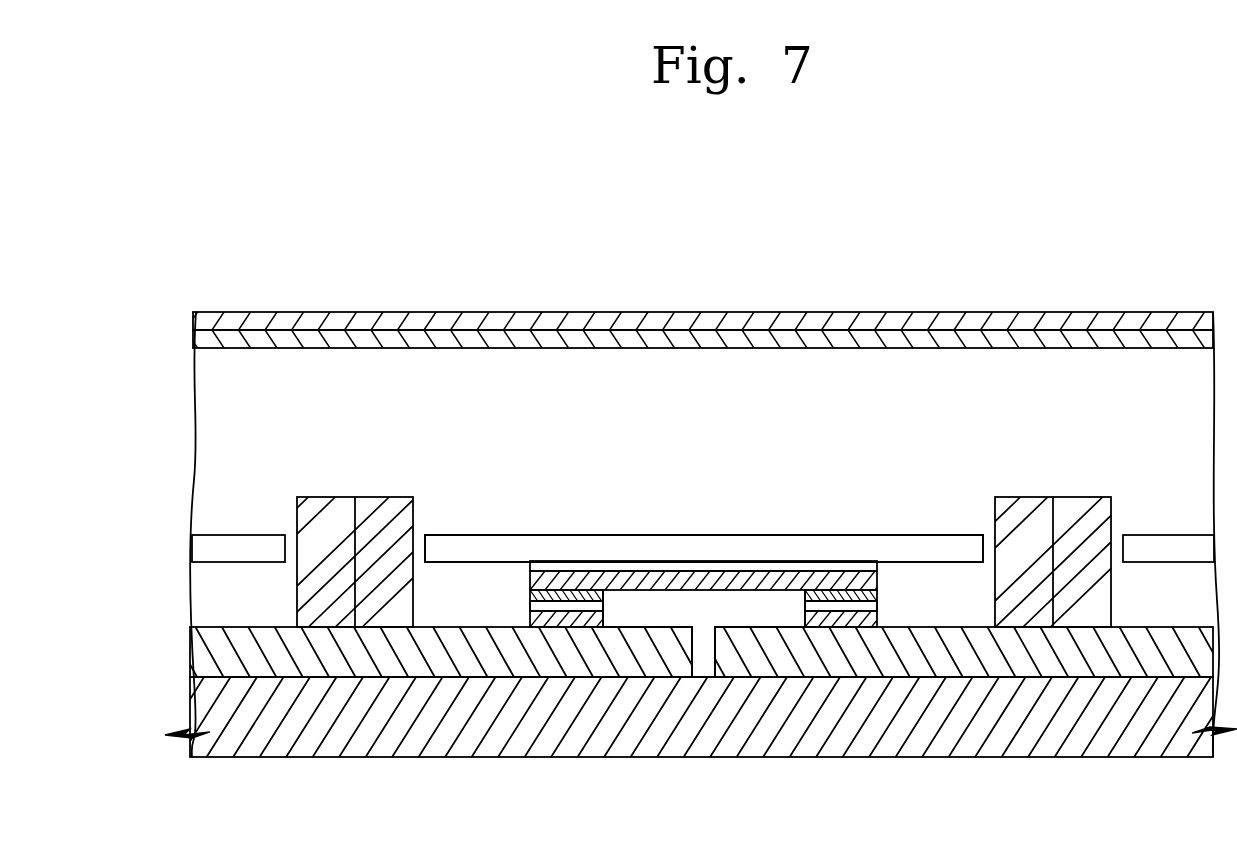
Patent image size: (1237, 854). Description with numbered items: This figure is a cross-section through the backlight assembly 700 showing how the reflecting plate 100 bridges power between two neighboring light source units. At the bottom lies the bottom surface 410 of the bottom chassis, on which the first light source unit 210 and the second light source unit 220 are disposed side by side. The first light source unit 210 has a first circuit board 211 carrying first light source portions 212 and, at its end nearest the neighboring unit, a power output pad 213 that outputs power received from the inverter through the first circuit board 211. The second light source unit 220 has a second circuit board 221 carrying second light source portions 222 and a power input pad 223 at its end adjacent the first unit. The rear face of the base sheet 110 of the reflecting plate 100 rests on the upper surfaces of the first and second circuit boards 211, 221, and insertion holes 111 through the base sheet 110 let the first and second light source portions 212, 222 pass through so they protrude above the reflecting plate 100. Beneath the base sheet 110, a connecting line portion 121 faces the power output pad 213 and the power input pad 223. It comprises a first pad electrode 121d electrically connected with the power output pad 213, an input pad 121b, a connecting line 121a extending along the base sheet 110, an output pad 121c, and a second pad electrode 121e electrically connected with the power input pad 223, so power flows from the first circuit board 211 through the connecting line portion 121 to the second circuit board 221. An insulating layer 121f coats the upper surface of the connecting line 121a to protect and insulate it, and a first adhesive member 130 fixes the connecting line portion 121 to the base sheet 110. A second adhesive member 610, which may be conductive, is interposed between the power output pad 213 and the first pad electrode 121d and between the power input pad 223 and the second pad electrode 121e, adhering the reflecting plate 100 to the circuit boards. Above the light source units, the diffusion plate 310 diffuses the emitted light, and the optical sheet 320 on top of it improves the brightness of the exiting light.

The backlight assembly 700 is at (1180, 178).
The diffusion plate 310 is at (867, 340).
The optical sheet 320 is at (1028, 323).
The reflecting plate 100 is at (1170, 531).
The base sheet 110 is at (938, 548).
The insertion holes 111 is at (428, 540).
The connecting line portion 121 is at (472, 452).
The connecting line 121a is at (715, 578).
The input pad 121b is at (832, 583).
The output pad 121c is at (573, 585).
The first pad electrode 121d is at (860, 597).
The second pad electrode 121e is at (555, 587).
The insulating layer 121f is at (647, 597).
The first adhesive member 130 is at (677, 567).
The first light source unit 210 is at (1115, 681).
The first circuit board 211 is at (1005, 660).
The first light source portions 212 is at (1067, 497).
The power output pad 213 is at (820, 620).
The second light source unit 220 is at (278, 681).
The second circuit board 221 is at (402, 662).
The second light source portions 222 is at (368, 497).
The power input pad 223 is at (553, 617).
The bottom surface 410 is at (741, 745).
The second adhesive member 610 is at (582, 608).